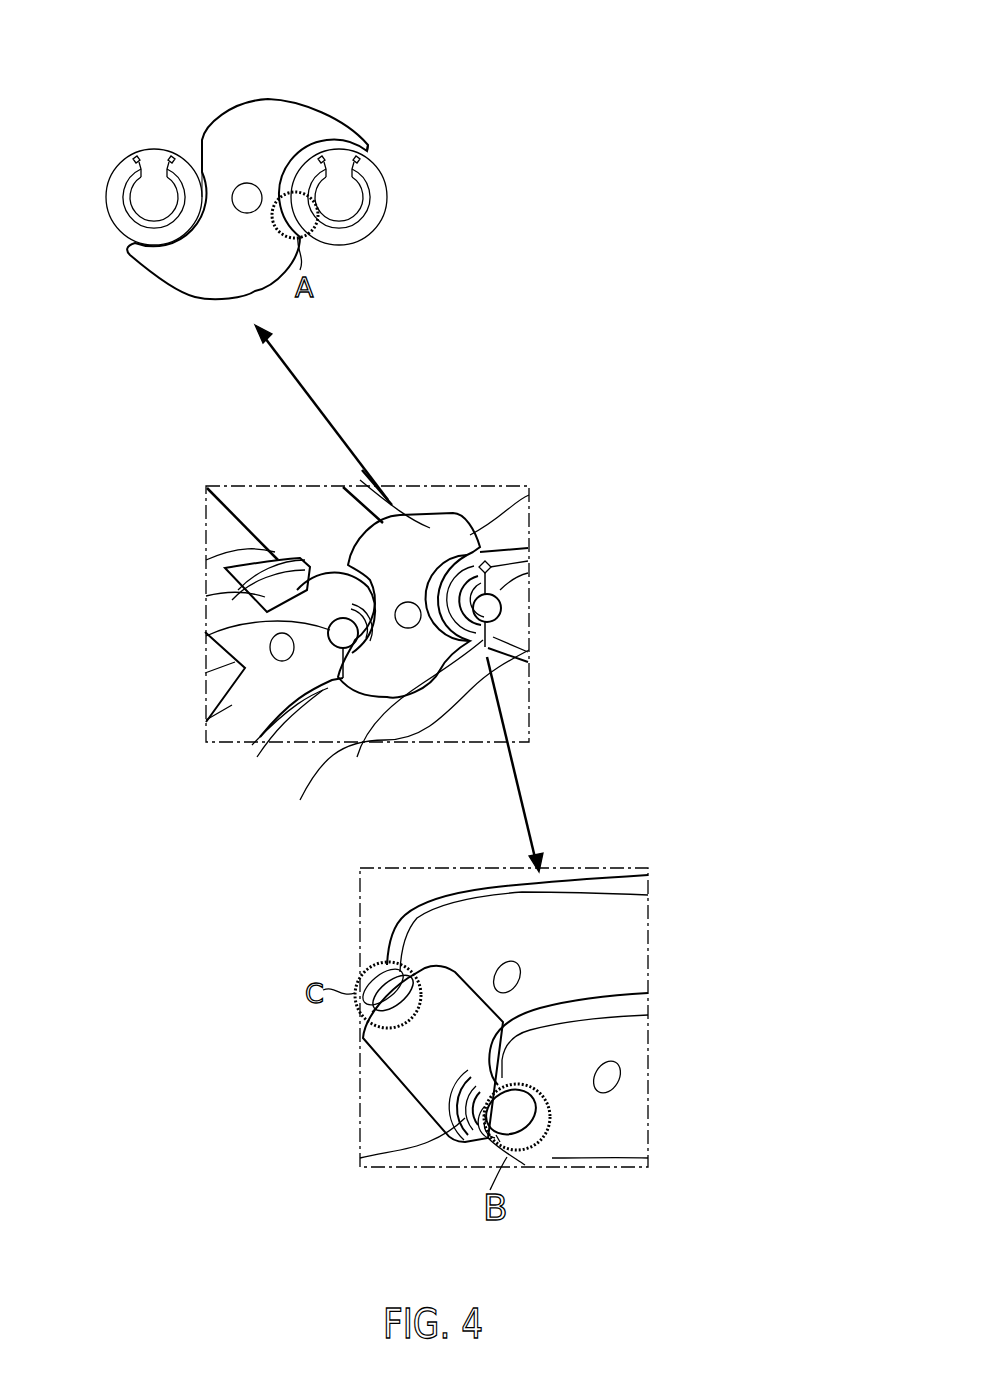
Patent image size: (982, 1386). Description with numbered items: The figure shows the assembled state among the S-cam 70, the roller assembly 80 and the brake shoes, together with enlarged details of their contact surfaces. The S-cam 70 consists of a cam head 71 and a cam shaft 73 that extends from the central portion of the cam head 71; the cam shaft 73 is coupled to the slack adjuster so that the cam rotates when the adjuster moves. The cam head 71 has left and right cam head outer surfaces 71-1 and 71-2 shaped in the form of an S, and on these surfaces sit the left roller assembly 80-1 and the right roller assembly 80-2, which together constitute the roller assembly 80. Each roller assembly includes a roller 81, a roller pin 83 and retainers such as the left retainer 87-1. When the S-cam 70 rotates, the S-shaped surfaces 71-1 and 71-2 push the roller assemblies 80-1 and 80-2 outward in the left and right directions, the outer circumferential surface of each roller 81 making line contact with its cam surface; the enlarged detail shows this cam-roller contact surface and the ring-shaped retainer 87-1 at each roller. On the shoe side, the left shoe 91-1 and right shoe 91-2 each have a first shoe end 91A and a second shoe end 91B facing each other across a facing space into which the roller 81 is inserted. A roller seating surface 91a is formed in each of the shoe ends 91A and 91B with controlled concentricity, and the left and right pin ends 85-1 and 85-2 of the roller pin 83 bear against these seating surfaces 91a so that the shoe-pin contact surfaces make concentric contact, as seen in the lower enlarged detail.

The S-cam 70 is at (223, 377).
The cam head 71 is at (267, 133).
The left cam head outer surface 71-1 is at (200, 143).
The right cam head outer surface 71-2 is at (310, 157).
The cam shaft 73 is at (255, 500).
The roller assembly 80 is at (347, 828).
The left roller assembly 80-1 is at (320, 700).
The right roller assembly 80-2 is at (420, 690).
The roller 81 is at (318, 590).
The roller pin 83 is at (338, 622).
The left pin end 85-1 is at (477, 1108).
The right pin end 85-2 is at (360, 1016).
The left retainer 87-1 is at (342, 592).
The left shoe 91-1 is at (223, 720).
The right shoe 91-2 is at (530, 560).
The roller seating surface 91a is at (227, 650).
The first shoe end 91A is at (608, 1003).
The second shoe end 91B is at (615, 890).